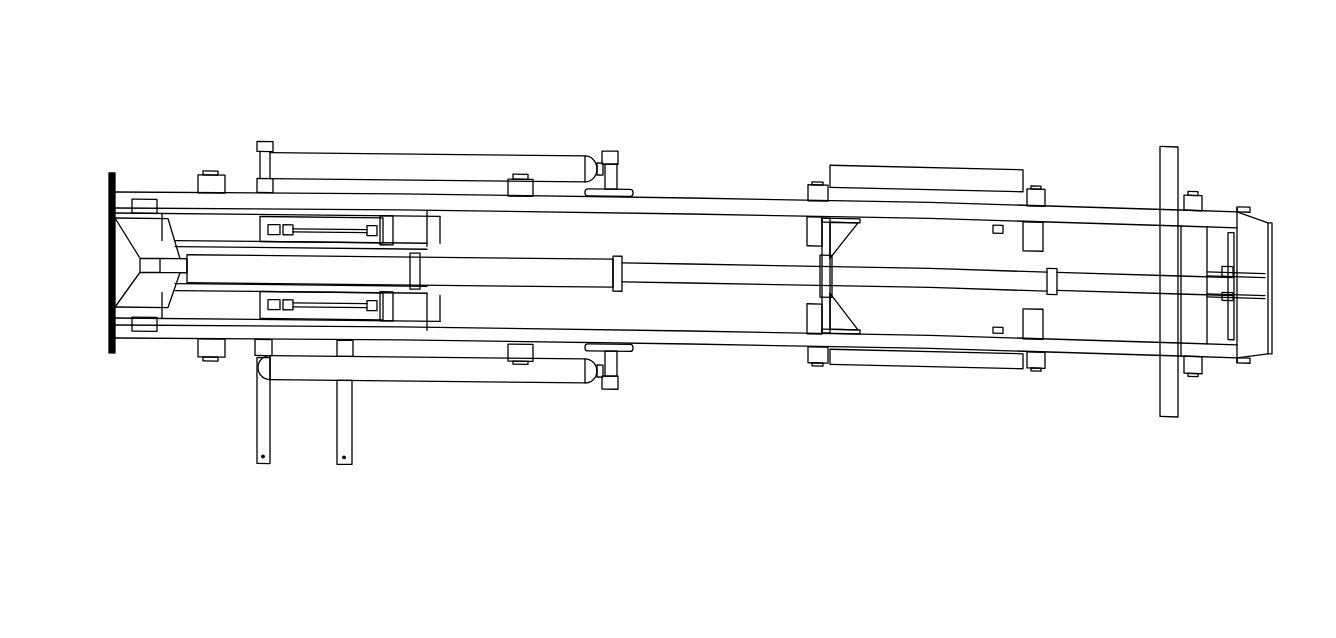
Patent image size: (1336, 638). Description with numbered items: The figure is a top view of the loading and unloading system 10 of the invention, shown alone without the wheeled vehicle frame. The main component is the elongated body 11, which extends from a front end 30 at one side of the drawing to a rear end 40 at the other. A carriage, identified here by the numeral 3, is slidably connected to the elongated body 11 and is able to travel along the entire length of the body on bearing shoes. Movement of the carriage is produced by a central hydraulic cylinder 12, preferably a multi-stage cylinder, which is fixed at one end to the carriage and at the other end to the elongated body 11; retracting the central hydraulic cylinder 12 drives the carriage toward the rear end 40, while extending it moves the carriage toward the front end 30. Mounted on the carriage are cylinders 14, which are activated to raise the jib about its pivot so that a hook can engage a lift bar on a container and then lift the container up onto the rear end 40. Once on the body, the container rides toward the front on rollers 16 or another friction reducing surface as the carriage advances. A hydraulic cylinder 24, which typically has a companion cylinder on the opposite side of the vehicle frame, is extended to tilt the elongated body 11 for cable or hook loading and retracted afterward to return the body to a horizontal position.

The system 10 is at (670, 60).
The elongated body 11 is at (1088, 207).
The central hydraulic cylinder 12 is at (685, 270).
The cylinders 14 is at (318, 215).
The rollers 16 is at (1050, 350).
The hydraulic cylinder 24 is at (452, 151).
The carriage 3 is at (432, 300).
The front end 30 is at (65, 275).
The rear end 40 is at (1325, 275).